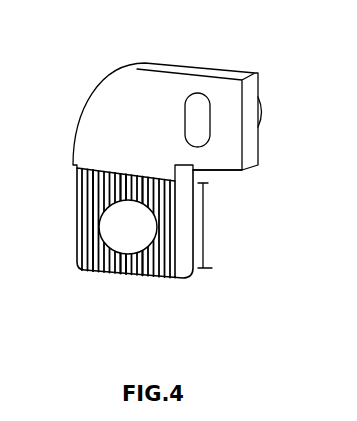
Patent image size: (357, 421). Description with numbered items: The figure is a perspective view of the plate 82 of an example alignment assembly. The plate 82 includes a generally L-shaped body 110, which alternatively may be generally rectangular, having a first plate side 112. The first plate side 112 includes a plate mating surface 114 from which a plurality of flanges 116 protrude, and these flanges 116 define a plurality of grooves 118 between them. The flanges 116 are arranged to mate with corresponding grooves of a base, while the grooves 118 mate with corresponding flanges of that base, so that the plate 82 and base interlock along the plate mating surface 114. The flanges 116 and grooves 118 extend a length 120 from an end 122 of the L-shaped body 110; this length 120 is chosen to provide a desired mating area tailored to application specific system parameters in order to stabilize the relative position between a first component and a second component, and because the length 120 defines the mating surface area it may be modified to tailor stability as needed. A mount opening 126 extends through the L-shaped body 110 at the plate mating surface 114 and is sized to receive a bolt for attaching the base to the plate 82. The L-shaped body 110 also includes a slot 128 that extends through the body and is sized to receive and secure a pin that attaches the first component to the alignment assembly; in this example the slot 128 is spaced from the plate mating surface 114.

The plate 82 is at (295, 90).
The L-shaped body 110 is at (168, 152).
The first plate side 112 is at (117, 108).
The plate mating surface 114 is at (120, 265).
The flanges 116 is at (110, 283).
The grooves 118 is at (82, 281).
The length 120 is at (205, 233).
The end 122 is at (123, 292).
The mount opening 126 is at (125, 228).
The slot 128 is at (197, 112).